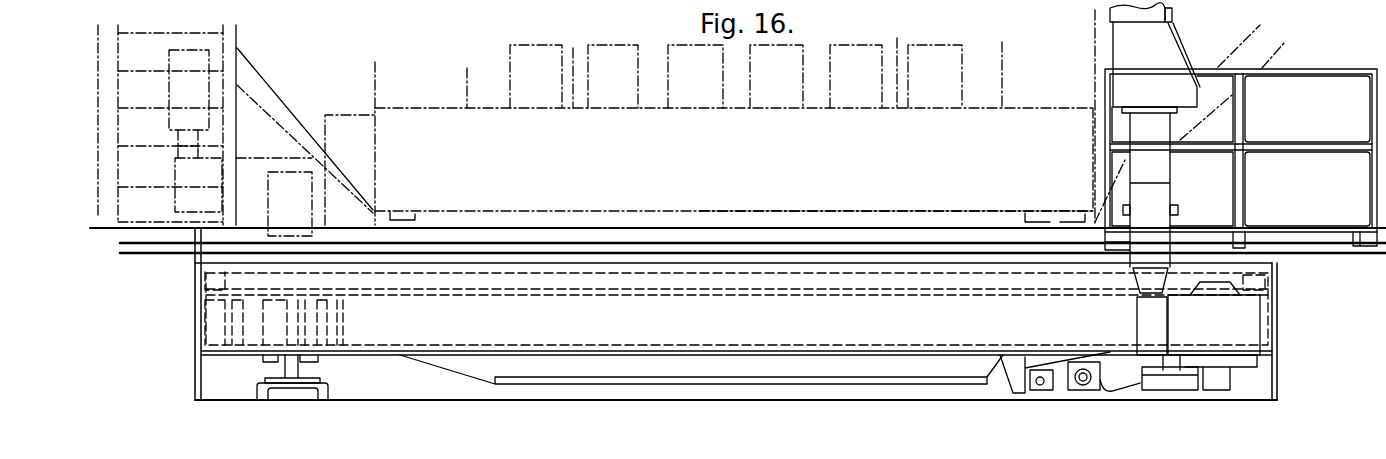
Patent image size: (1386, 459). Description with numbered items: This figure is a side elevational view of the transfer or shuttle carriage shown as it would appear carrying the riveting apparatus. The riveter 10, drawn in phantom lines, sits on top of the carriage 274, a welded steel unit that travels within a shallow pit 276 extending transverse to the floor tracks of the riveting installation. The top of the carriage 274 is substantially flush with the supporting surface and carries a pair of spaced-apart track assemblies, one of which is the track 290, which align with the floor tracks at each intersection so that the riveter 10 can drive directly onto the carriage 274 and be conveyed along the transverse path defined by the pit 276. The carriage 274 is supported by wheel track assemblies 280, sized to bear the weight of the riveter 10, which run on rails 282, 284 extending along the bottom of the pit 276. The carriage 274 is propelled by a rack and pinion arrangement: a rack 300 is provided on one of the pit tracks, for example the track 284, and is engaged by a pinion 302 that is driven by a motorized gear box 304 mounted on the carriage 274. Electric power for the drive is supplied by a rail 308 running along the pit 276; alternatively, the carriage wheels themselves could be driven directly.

The riveter 10 is at (731, 153).
The carriage 274 is at (710, 330).
The pit 276 is at (1308, 383).
The wheel track assemblies 280 is at (897, 125).
The rail 282 is at (300, 376).
The rail 284 is at (1165, 362).
The track assembly 290 is at (818, 240).
The rack 300 is at (1180, 352).
The pinion 302 is at (1257, 357).
The motorized gear box 304 is at (1255, 312).
The rail 308 is at (1112, 350).